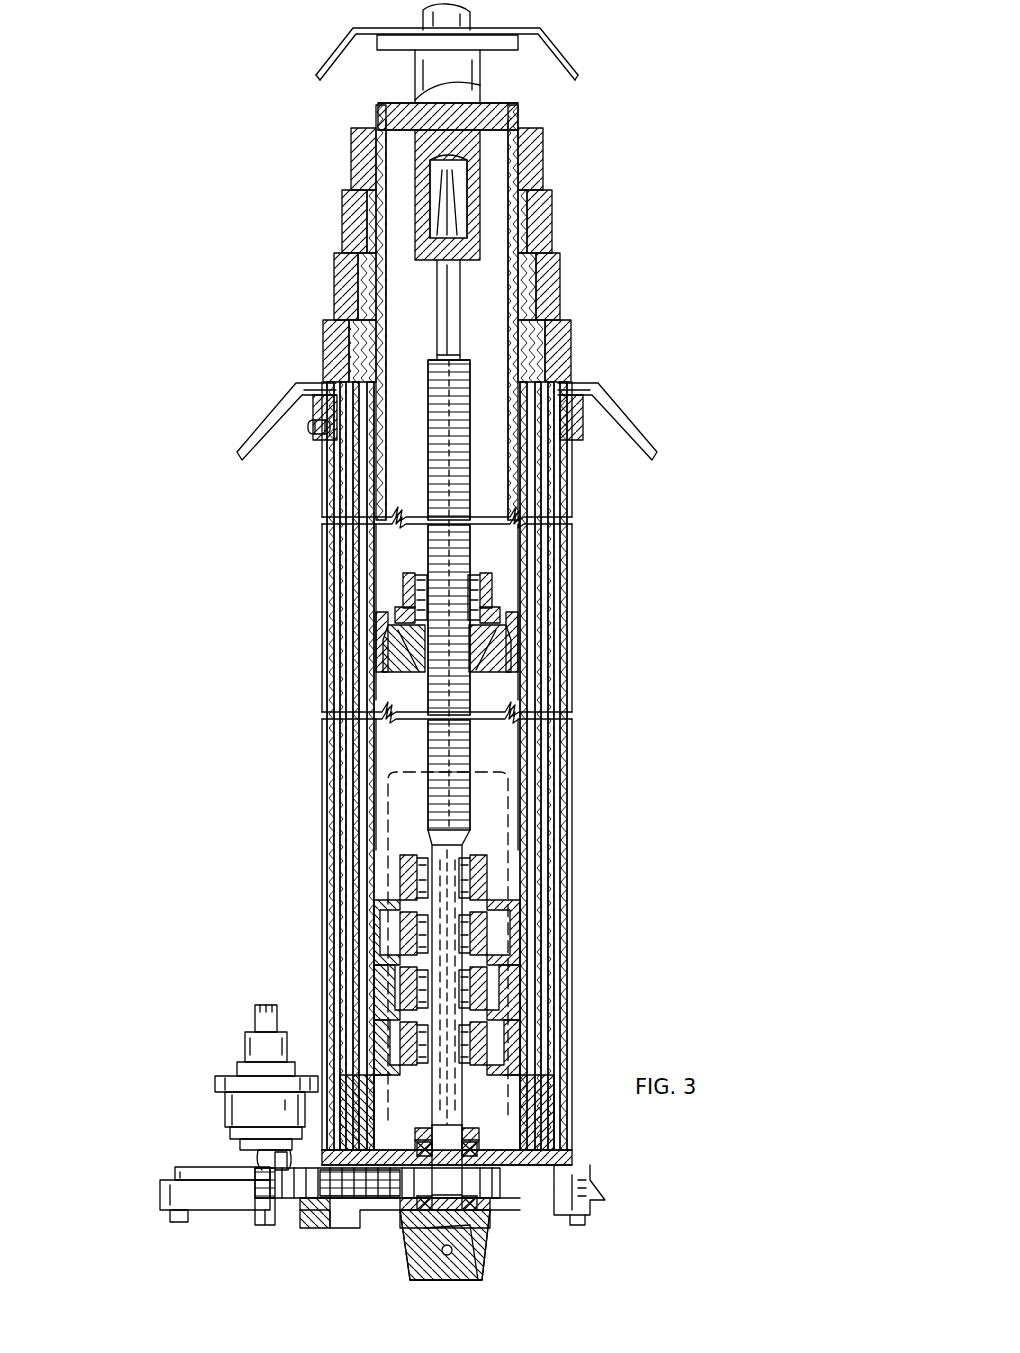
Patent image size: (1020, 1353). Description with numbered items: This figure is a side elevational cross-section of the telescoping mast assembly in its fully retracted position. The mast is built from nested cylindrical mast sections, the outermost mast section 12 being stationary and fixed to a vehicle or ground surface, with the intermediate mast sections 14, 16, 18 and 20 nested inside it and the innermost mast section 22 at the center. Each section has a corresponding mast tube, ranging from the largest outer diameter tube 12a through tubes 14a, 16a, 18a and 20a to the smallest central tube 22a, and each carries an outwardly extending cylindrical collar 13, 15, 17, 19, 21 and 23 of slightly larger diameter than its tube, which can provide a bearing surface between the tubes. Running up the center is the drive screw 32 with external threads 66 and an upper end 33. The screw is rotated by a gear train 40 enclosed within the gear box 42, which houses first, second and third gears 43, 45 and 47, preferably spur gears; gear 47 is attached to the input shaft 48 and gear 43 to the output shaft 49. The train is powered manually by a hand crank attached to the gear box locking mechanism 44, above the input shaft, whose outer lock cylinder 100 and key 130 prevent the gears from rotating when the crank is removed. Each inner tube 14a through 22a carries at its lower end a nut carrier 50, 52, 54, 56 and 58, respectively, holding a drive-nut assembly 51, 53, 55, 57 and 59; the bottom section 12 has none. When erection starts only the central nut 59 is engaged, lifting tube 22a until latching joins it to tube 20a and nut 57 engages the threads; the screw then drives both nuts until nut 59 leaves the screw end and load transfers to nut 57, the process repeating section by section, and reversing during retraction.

The outermost mast section 12 is at (325, 775).
The mast tube 12a is at (330, 793).
The cylindrical collar 13 is at (585, 415).
The mast section 14 is at (335, 690).
The mast tube 14a is at (342, 660).
The cylindrical collar 15 is at (572, 343).
The mast section 16 is at (548, 832).
The mast tube 16a is at (545, 815).
The cylindrical collar 17 is at (562, 285).
The mast section 18 is at (540, 690).
The mast tube 18a is at (535, 670).
The cylindrical collar 19 is at (555, 224).
The mast section 20 is at (530, 550).
The mast tube 20a is at (525, 568).
The cylindrical collar 21 is at (545, 165).
The innermost mast section 22 is at (385, 482).
The mast tube 22a is at (385, 498).
The cylindrical collar 23 is at (520, 111).
The drive screw 32 is at (478, 478).
The end of the screw 33 is at (428, 362).
The gear train 40 is at (378, 1158).
The gear box 42 is at (325, 1215).
The first gear 43 is at (493, 1196).
The gear box locking mechanism 44 is at (218, 1105).
The second gear 45 is at (378, 1196).
The third gear 47 is at (268, 1183).
The input shaft 48 is at (265, 1158).
The output shaft 49 is at (455, 1135).
The nut carrier 50 is at (410, 1045).
The drive-nut assembly 51 is at (480, 1050).
The nut carrier 52 is at (410, 985).
The drive-nut assembly 53 is at (480, 995).
The nut carrier 54 is at (410, 930).
The drive-nut assembly 55 is at (480, 935).
The nut carrier assembly 56 is at (410, 875).
The nut assembly 57 is at (480, 880).
The nut carrier 58 is at (405, 590).
The drive-nut assembly 59 is at (488, 595).
The external threads 66 is at (470, 752).
The outer lock cylinder 100 is at (228, 1117).
The key 130 is at (258, 1012).